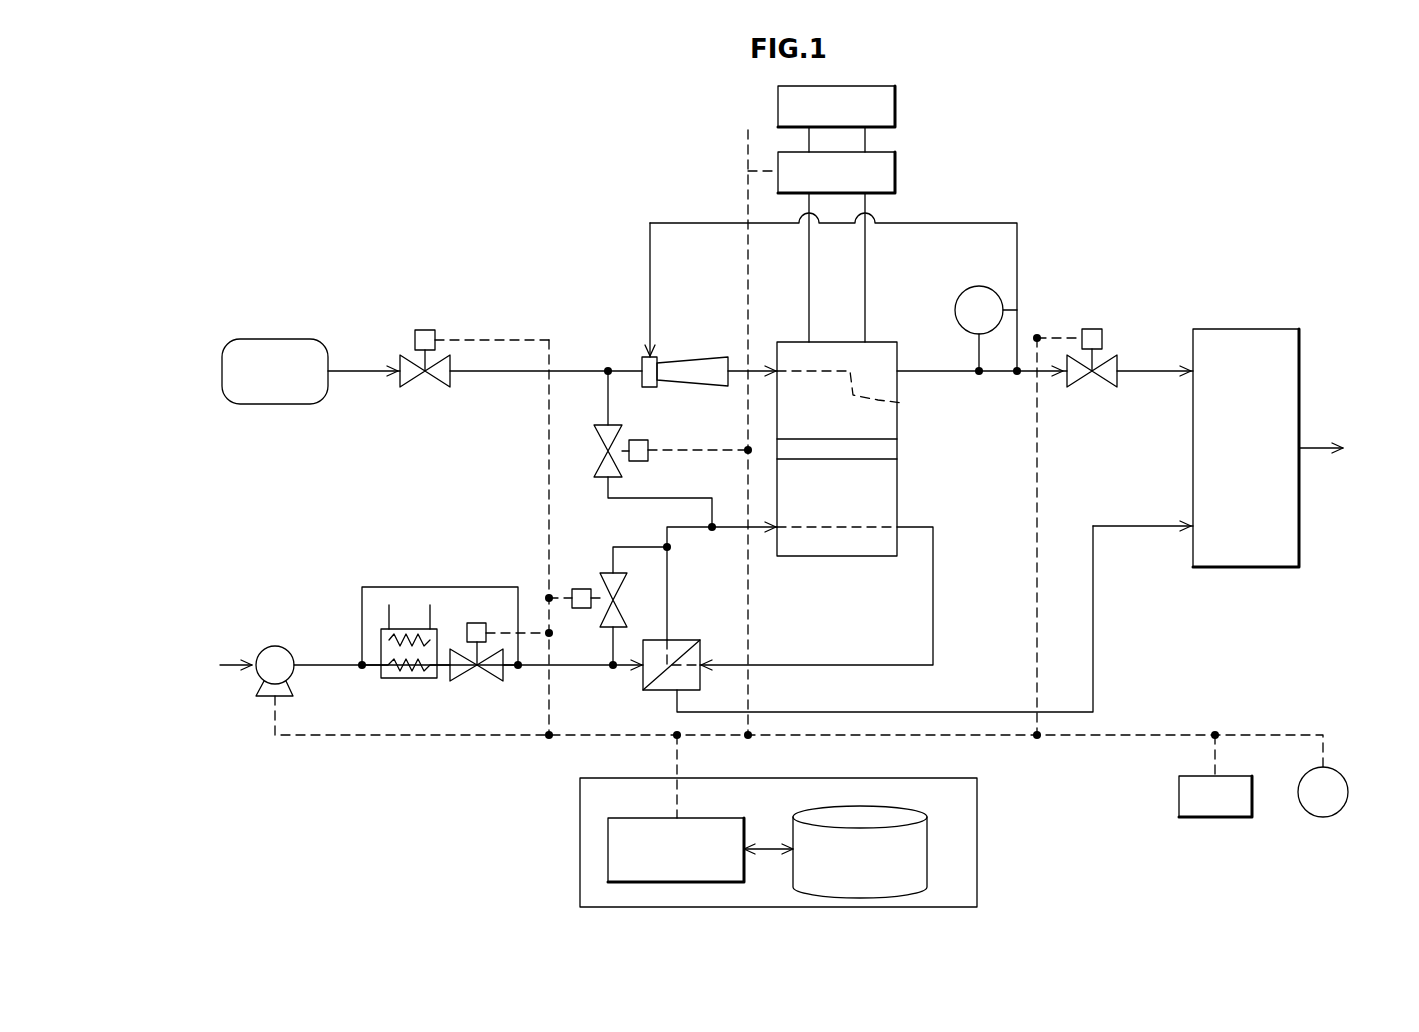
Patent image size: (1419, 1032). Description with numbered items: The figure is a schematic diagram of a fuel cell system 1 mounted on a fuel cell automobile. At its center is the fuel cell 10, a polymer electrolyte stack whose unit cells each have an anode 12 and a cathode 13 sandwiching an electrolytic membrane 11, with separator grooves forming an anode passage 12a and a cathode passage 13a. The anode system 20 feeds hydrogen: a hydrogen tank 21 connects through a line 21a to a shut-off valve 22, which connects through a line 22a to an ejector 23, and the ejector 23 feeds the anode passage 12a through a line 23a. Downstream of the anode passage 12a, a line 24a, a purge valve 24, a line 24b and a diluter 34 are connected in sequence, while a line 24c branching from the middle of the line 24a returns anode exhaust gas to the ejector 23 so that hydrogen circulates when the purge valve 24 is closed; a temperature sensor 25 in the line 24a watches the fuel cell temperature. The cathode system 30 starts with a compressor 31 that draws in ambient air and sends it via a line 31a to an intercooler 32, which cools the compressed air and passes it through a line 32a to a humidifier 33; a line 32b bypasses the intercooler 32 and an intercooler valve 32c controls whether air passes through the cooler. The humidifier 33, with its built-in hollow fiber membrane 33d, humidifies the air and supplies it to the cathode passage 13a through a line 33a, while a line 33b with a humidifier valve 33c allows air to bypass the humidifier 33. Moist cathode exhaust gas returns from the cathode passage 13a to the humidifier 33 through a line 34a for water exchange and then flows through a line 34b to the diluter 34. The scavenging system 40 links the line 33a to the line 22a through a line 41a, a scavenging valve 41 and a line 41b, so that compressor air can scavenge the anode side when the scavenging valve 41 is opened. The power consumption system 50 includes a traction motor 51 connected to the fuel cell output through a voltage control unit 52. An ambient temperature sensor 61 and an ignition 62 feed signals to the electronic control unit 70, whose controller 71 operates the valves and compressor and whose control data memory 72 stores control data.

The fuel cell system 1 is at (1145, 164).
The fuel cell 10 is at (889, 400).
The electrolytic membrane 11 is at (897, 449).
The anode 12 is at (877, 342).
The anode passage 12a is at (861, 394).
The cathode 13 is at (815, 556).
The cathode passage 13a is at (873, 527).
The anode system 20 is at (263, 311).
The hydrogen tank 21 is at (290, 339).
The line 21a is at (355, 372).
The shut-off valve 22 is at (425, 330).
The line 22a is at (478, 372).
The ejector 23 is at (688, 360).
The line 23a is at (740, 376).
The purge valve 24 is at (1092, 329).
The line 24a is at (965, 372).
The line 24b is at (1158, 371).
The line 24c is at (962, 223).
The temperature sensor 25 is at (980, 286).
The cathode system 30 is at (731, 667).
The compressor 31 is at (275, 646).
The line 31a is at (325, 665).
The intercooler 32 is at (408, 678).
The line 32a is at (525, 666).
The line 32b is at (445, 587).
The intercooler valve 32c is at (487, 617).
The humidifier 33 is at (643, 681).
The line 33a is at (683, 527).
The line 33b is at (633, 547).
The humidifier valve 33c is at (581, 608).
The hollow fiber membrane 33d is at (660, 690).
The diluter 34 is at (1268, 329).
The line 34a is at (933, 603).
The line 34b is at (1157, 526).
The scavenging system 40 is at (663, 537).
The scavenging valve 41 is at (640, 440).
The line 41a is at (690, 498).
The line 41b is at (606, 392).
The power consumption system 50 is at (825, 410).
The traction motor 51 is at (897, 100).
The voltage control unit 52 is at (897, 168).
The ambient temperature sensor 61 is at (1323, 817).
The ignition 62 is at (1215, 817).
The electronic control unit 70 is at (778, 821).
The controller 71 is at (705, 818).
The control data memory 72 is at (905, 807).